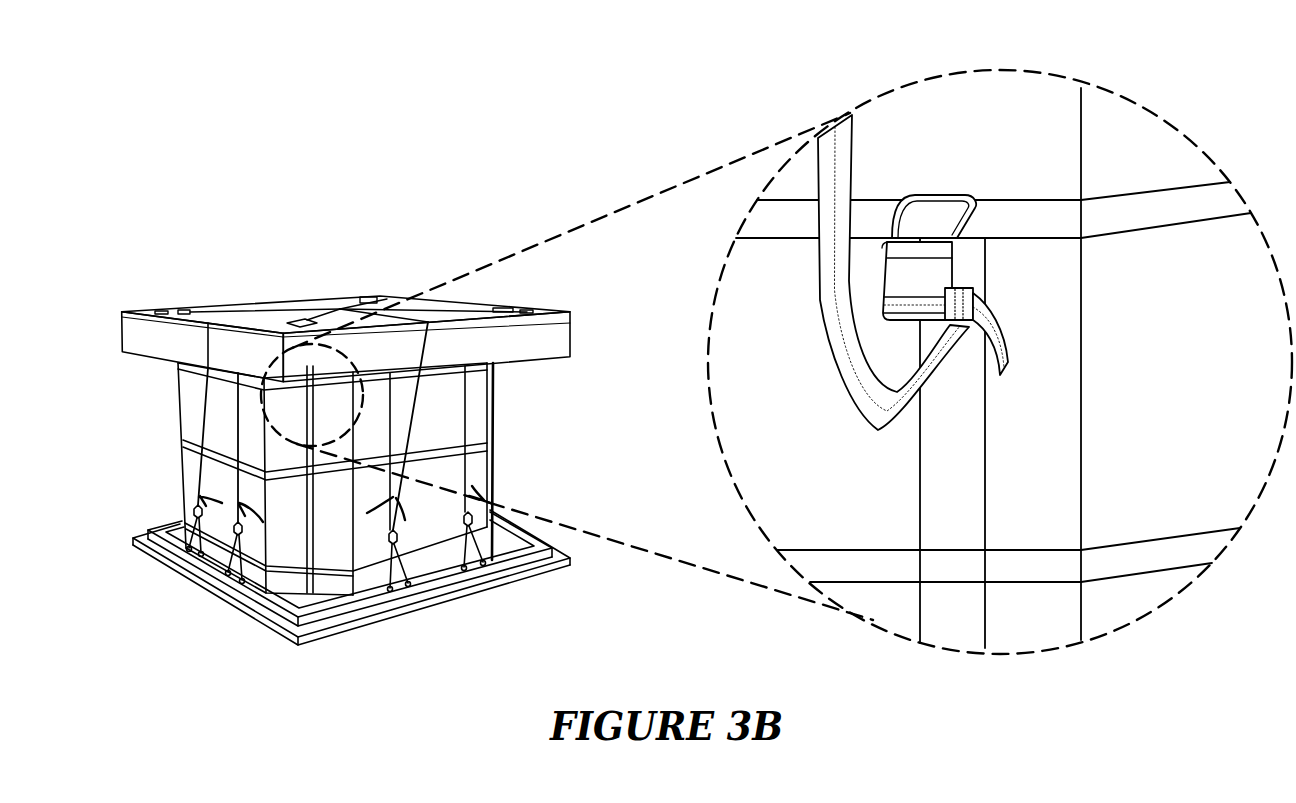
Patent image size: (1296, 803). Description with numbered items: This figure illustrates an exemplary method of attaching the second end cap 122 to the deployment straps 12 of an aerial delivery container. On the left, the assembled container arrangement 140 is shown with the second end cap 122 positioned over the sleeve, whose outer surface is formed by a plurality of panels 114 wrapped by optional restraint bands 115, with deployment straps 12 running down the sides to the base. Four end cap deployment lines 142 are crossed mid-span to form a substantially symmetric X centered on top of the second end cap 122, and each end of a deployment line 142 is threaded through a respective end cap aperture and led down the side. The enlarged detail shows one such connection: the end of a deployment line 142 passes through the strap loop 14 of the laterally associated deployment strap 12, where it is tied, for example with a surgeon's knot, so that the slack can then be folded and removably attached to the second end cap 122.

The deployment strap 12 is at (967, 435).
The strap loop 14 is at (945, 275).
The panels 114 is at (987, 364).
The restraint bands 115 is at (1123, 215).
The second end cap 122 is at (935, 95).
The packaged assembly 140 is at (271, 278).
The end cap deployment lines 142 is at (838, 353).